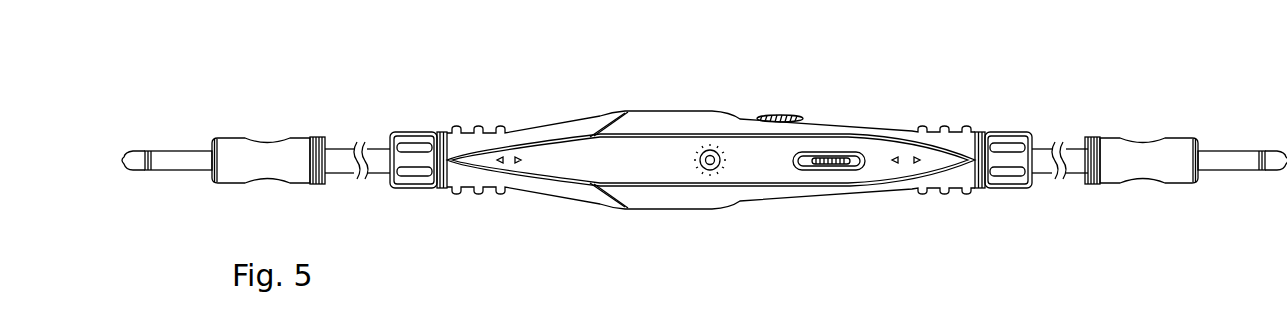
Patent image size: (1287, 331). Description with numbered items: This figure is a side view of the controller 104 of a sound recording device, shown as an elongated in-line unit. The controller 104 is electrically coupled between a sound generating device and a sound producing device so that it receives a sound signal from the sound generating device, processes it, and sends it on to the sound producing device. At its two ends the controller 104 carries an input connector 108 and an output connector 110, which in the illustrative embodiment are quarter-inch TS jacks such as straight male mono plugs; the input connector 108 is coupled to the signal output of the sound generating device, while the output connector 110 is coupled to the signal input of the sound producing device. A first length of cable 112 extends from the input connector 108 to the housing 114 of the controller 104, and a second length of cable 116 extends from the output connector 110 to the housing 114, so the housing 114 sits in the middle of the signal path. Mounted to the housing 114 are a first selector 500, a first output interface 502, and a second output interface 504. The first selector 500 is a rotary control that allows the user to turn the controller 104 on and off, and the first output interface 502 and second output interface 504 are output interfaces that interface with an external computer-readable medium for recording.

The controller 104 is at (437, 100).
The input connector 108 is at (1280, 150).
The output connector 110 is at (125, 158).
The first length of cable 112 is at (1047, 155).
The housing 114 is at (847, 202).
The second length of cable 116 is at (345, 145).
The first selector 500 is at (717, 152).
The first output interface 502 is at (817, 153).
The second output interface 504 is at (852, 153).